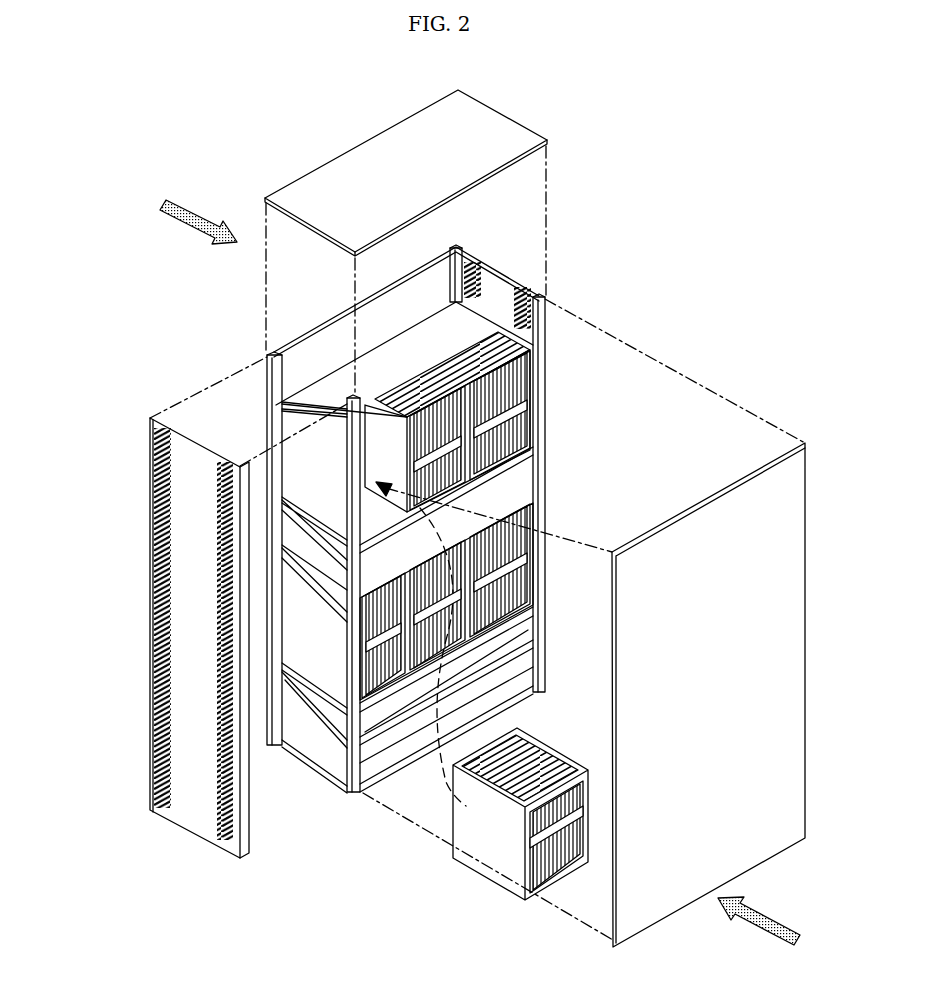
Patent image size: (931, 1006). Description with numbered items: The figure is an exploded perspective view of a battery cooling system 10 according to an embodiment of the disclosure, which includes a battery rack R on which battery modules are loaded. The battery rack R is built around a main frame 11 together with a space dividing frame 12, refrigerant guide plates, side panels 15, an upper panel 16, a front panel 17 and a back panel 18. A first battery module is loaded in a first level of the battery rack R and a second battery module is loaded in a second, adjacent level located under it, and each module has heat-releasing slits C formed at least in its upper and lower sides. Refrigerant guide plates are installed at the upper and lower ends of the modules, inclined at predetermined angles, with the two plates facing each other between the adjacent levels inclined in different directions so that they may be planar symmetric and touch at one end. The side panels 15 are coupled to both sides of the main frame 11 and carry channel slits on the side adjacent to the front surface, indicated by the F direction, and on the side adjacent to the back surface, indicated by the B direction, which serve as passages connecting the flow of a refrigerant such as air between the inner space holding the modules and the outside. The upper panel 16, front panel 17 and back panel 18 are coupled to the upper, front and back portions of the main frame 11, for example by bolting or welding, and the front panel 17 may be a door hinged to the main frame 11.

The battery cooling system 10 is at (304, 124).
The upper panel 16 is at (500, 128).
The back surface direction B is at (192, 212).
The battery rack R is at (552, 293).
The back panel 18 is at (334, 316).
The side panel 15 is at (195, 455).
The main frame 11 is at (277, 470).
The heat-releasing slit C is at (468, 364).
The space dividing frame 12 is at (533, 446).
The front panel 17 is at (738, 492).
The front surface direction F is at (767, 927).